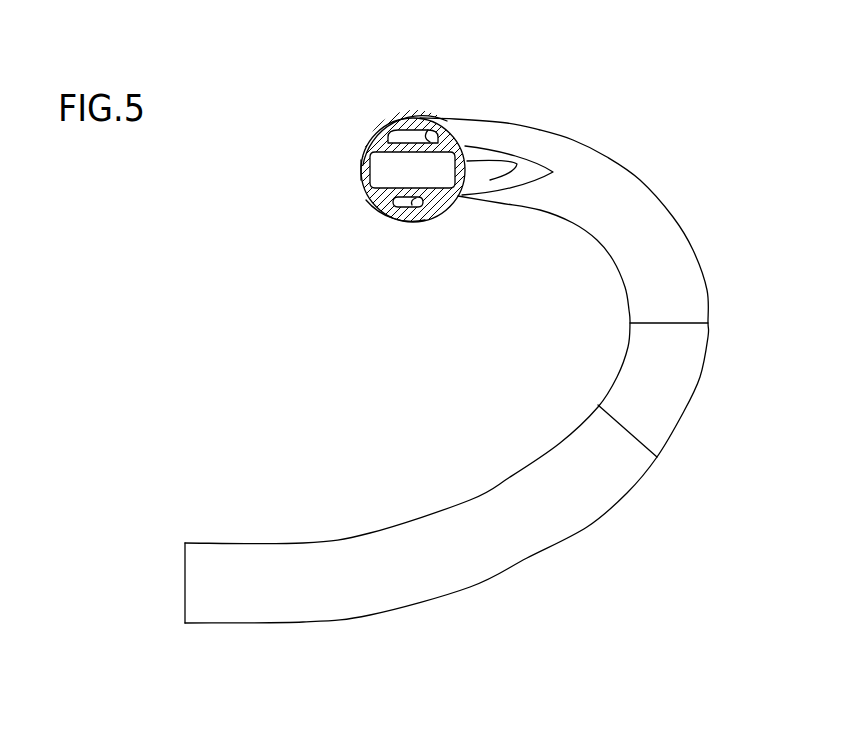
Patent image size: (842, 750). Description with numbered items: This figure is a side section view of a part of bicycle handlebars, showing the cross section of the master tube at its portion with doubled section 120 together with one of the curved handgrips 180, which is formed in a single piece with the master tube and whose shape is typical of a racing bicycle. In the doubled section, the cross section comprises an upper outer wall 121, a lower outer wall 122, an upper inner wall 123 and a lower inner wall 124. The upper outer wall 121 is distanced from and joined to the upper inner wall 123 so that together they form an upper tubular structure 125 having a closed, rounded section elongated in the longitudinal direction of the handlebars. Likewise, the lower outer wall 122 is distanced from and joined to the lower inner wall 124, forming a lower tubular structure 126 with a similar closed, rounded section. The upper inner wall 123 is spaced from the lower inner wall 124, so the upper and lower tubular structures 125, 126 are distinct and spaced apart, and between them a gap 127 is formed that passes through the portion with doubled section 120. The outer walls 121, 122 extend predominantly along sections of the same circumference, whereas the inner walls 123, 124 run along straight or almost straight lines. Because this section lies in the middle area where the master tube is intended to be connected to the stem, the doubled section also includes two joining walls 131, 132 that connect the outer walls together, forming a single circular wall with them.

The portion with doubled section 120 is at (455, 119).
The upper outer wall 121 is at (405, 123).
The lower outer wall 122 is at (413, 221).
The upper inner wall 123 is at (432, 142).
The lower inner wall 124 is at (418, 203).
The upper tubular structure 125 is at (372, 132).
The lower tubular structure 126 is at (368, 207).
The gap 127 is at (338, 157).
The joining wall 131 is at (470, 181).
The joining wall 132 is at (358, 170).
The handgrip 180 is at (450, 543).